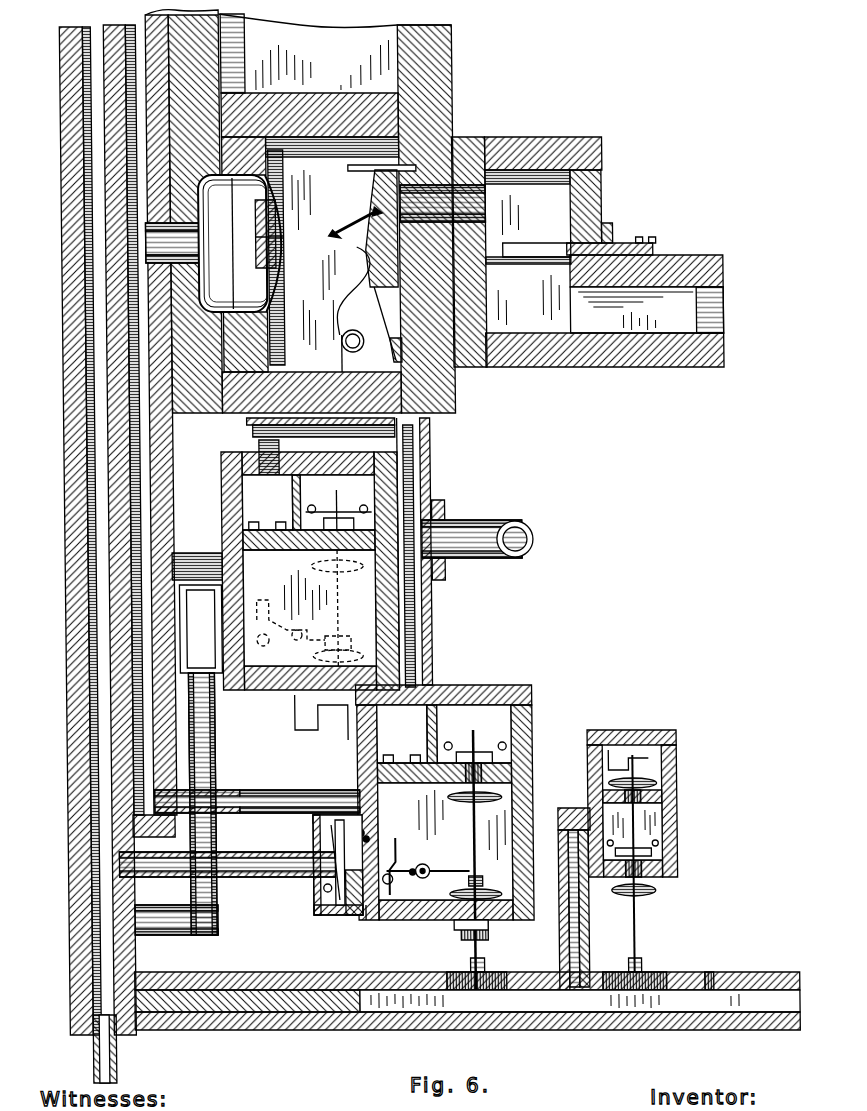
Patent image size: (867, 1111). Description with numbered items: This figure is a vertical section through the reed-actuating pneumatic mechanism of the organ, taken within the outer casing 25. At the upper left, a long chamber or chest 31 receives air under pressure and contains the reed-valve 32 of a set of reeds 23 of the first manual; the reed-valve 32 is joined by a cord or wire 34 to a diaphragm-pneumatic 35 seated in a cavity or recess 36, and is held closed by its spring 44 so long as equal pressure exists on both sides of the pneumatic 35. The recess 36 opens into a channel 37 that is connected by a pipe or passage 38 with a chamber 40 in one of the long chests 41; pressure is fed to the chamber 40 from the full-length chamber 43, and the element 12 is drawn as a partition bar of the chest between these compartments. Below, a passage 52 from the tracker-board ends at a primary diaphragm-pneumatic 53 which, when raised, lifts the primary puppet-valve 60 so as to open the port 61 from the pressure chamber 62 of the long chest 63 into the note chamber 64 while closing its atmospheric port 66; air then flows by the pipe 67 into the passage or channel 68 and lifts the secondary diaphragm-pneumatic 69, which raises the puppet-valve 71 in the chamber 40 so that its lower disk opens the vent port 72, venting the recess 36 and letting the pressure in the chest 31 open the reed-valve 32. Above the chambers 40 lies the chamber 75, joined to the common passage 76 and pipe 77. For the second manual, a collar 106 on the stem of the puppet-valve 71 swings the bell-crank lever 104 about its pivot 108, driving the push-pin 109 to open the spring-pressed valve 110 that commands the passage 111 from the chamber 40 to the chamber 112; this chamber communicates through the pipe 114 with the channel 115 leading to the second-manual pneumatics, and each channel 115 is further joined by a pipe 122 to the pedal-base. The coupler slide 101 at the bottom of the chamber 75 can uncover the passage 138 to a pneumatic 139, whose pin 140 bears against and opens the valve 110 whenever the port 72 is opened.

The partition bar 12 is at (483, 770).
The sets of reeds of the first manual 23 is at (610, 235).
The outer casing 25 is at (60, 531).
The chamber or chest 31 is at (342, 251).
The reed-valve 32 is at (374, 189).
The cord or wire 34 is at (341, 219).
The diaphragm-pneumatic 35 is at (254, 234).
The cavity or recess 36 is at (233, 243).
The channel 37 is at (136, 158).
The pipe or passage 38 is at (189, 562).
The chamber 40 is at (378, 715).
The long chest 41 is at (216, 498).
The chamber 43 is at (482, 700).
The spring 44 is at (344, 301).
The passage 52 is at (709, 990).
The primary diaphragm-pneumatic 53 is at (640, 968).
The primary puppet-valve 60 is at (631, 830).
The port 61 is at (651, 795).
The chamber 62 is at (641, 772).
The long chest 63 is at (636, 792).
The chamber 64 is at (646, 820).
The port 66 is at (655, 866).
The pipe 67 is at (574, 818).
The passage or channel 68 is at (544, 1016).
The secondary diaphragm-pneumatic 69 is at (482, 969).
The puppet-valve 71 is at (476, 865).
The port 72 is at (480, 922).
The chamber 75 is at (257, 478).
The passage 76 is at (411, 617).
The pipe 77 is at (504, 535).
The slide 101 is at (400, 738).
The bell-crank lever 104 is at (396, 880).
The collar 106 is at (473, 885).
The pivot 108 is at (427, 856).
The push-pin 109 is at (356, 905).
The spring-pressed valve 110 is at (317, 840).
The passage 111 is at (227, 877).
The chamber 112 is at (309, 800).
The pipe 114 is at (170, 948).
The channel 115 is at (101, 356).
The pipe 122 is at (100, 1046).
The passage 138 is at (382, 752).
The pneumatic 139 is at (353, 832).
The pin 140 is at (358, 838).